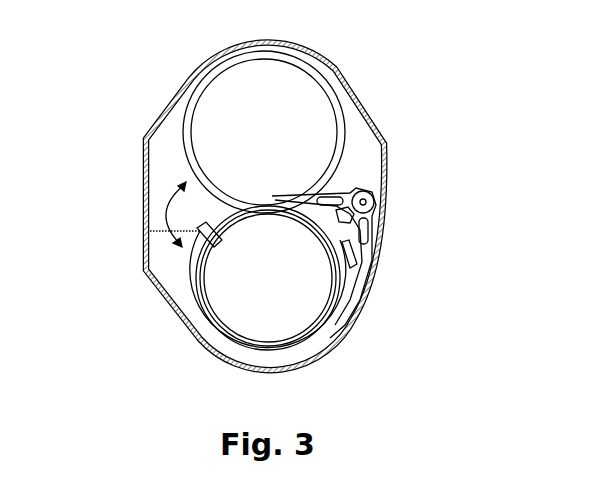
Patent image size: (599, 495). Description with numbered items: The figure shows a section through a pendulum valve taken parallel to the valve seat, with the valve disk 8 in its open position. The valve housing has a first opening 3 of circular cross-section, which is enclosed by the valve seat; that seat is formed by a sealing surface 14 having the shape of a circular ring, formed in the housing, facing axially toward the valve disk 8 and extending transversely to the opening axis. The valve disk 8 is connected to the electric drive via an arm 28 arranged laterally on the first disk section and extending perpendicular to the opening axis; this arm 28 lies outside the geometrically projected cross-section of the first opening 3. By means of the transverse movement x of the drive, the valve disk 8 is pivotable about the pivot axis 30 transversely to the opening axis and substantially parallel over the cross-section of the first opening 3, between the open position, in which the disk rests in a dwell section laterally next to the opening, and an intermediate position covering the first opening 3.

The first opening 3 is at (312, 107).
The sealing surface 14 is at (343, 137).
The valve disk 8 is at (175, 268).
The arm 28 is at (367, 253).
The pivot axis 30 is at (365, 204).
The transverse movement x is at (165, 213).